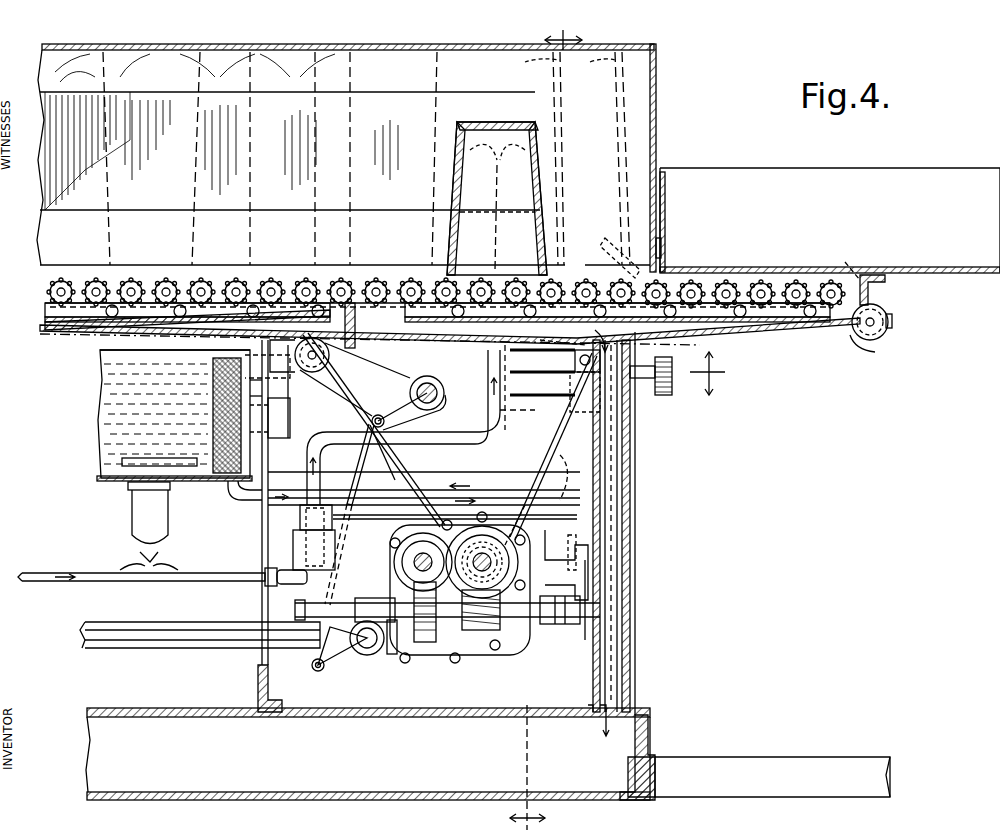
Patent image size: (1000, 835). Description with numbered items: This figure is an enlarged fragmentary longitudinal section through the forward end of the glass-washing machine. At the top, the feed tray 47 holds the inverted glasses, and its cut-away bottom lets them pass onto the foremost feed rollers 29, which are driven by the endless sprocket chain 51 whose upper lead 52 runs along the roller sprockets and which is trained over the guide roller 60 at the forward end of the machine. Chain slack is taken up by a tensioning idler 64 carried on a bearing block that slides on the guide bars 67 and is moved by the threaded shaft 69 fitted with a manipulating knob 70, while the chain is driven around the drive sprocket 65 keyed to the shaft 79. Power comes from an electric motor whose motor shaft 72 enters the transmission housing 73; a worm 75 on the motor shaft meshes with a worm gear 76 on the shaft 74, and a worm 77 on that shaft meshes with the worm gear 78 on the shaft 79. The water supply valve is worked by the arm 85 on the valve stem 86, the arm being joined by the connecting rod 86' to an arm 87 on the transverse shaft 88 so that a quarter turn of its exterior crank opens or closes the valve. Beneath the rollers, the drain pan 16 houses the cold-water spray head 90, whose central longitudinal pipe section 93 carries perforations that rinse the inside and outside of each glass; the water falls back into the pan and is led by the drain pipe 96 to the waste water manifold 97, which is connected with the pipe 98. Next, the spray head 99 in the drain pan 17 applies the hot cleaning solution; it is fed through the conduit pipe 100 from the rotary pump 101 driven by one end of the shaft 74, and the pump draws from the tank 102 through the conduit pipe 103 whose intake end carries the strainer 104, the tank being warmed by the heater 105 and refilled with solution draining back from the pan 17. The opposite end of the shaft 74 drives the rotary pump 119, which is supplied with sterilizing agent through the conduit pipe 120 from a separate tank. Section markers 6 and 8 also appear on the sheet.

The feed rollers 29 is at (168, 280).
The spray head 99 is at (292, 298).
The drain pan 17 is at (358, 300).
The spray head 90 is at (497, 198).
The longitudinally arranged pipe section 93 is at (606, 282).
The feed tray 47 is at (830, 220).
The upper lead 52 is at (855, 268).
The guide roller 60 is at (876, 320).
The endless sprocket chain 51 is at (873, 348).
The drain pan 16 is at (788, 330).
The conduit pipe 100 is at (255, 328).
The section line 8 is at (716, 373).
The section line 6 is at (554, 432).
The tank 102 is at (108, 352).
The strainer 104 is at (255, 405).
The heater 105 is at (135, 512).
The conduit pipe 103 is at (252, 500).
The conduit pipe 120 is at (50, 572).
The rotary pump 119 is at (302, 545).
The connecting rod 86' is at (349, 514).
The arm 87 is at (402, 400).
The transverse shaft 88 is at (437, 382).
The transmission housing 73 is at (412, 537).
The guide bars 67 is at (580, 350).
The tensioning idler 64 is at (568, 398).
The drive sprocket 65 is at (515, 535).
The threaded shaft 69 is at (640, 380).
The manipulating knob 70 is at (672, 392).
The drain pipe 96 is at (608, 472).
The rotary pump 101 is at (585, 573).
The arm 85 is at (328, 662).
The valve stem 86 is at (367, 662).
The shaft 74 is at (392, 655).
The motor shaft 72 is at (415, 575).
The worm 75 is at (412, 562).
The worm gear 78 is at (495, 562).
The shaft 79 is at (500, 556).
The worm gear 76 is at (428, 645).
The worm 77 is at (487, 632).
The waste water manifold 97 is at (368, 754).
The pipe 98 is at (752, 766).